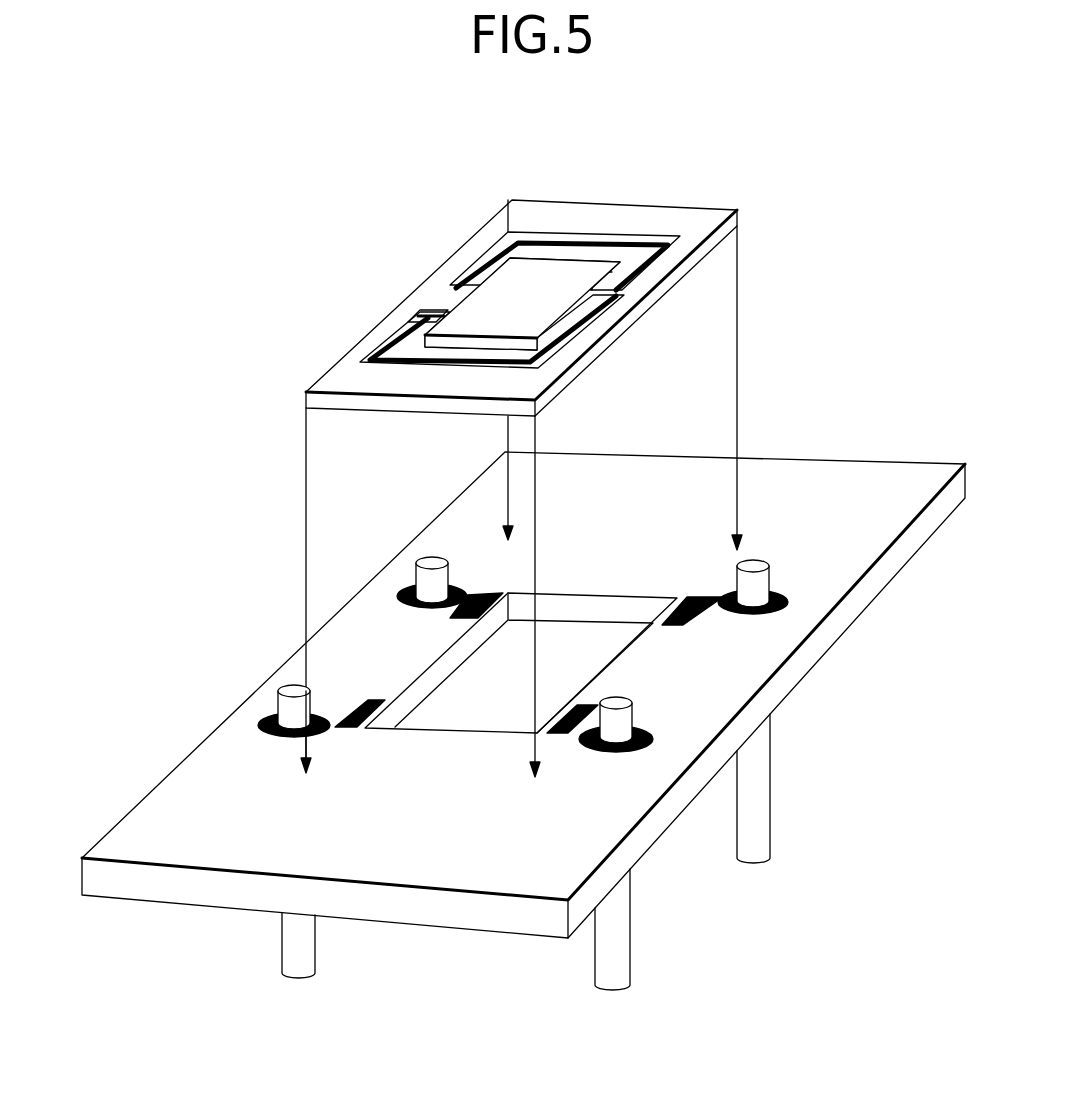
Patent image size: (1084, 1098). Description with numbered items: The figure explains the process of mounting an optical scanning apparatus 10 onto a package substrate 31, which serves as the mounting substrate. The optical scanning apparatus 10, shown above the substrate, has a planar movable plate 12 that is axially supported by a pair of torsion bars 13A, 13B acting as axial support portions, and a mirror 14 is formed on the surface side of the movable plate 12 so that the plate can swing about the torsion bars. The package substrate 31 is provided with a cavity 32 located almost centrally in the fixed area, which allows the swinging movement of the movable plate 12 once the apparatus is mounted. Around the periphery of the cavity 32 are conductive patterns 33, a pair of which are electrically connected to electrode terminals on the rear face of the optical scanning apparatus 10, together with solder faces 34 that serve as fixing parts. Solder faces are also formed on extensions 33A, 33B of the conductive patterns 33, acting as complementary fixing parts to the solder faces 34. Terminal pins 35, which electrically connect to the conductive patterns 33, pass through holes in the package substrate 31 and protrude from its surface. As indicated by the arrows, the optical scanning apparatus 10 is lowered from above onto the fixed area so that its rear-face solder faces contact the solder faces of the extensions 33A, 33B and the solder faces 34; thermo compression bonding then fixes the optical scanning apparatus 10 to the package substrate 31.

The optical scanning apparatus 10 is at (617, 202).
The movable plate 12 is at (423, 340).
The torsion bar 13A is at (450, 297).
The torsion bar 13B is at (590, 300).
The mirror 14 is at (523, 318).
The package substrate 31 is at (881, 459).
The cavity 32 is at (583, 610).
The conductive patterns 33 is at (420, 558).
The extension of conductive pattern 33A is at (457, 621).
The extension of conductive pattern 33B is at (695, 613).
The solder faces 34 is at (337, 727).
The terminal pins 35 is at (297, 957).